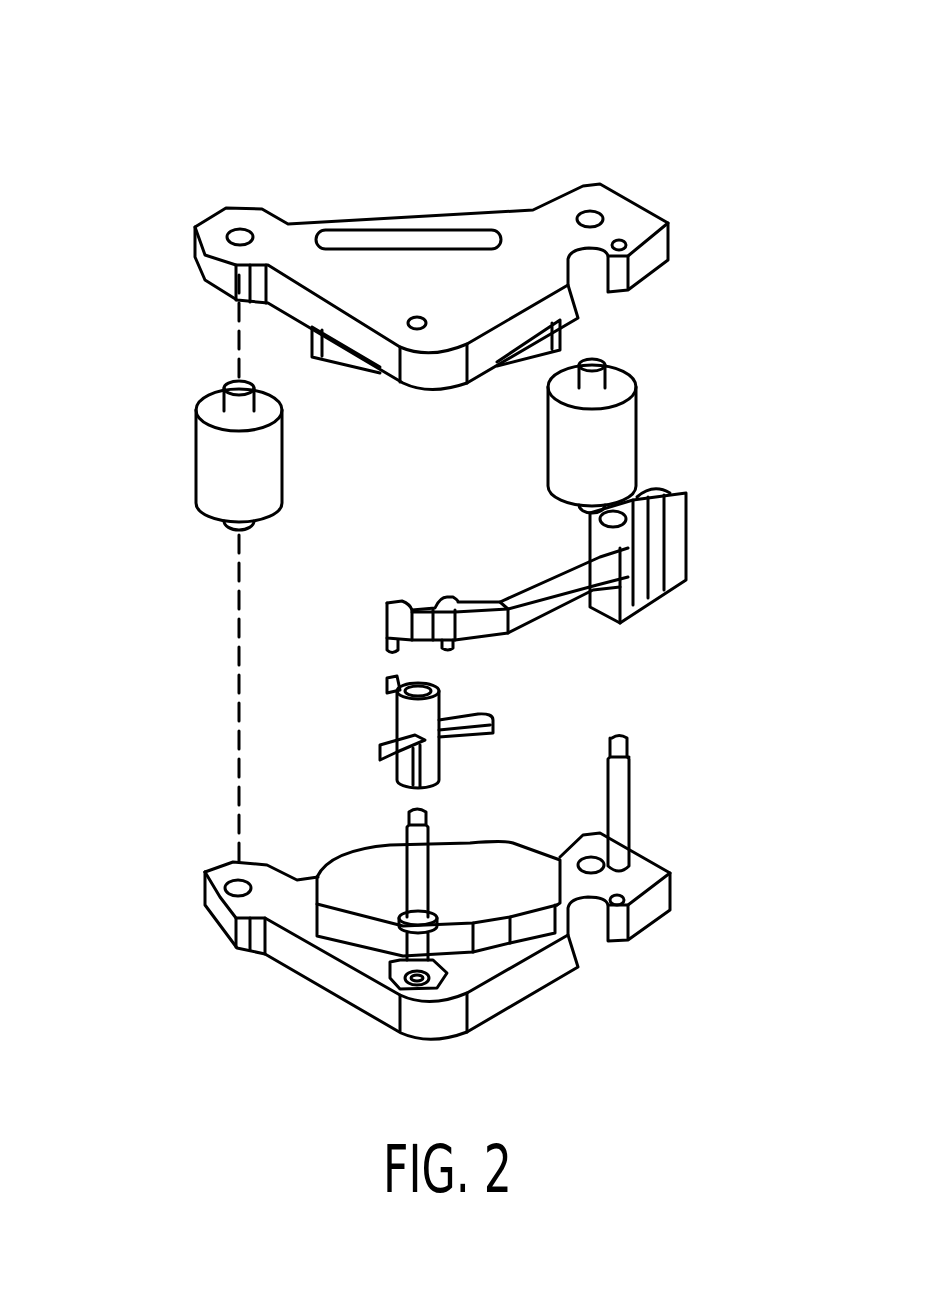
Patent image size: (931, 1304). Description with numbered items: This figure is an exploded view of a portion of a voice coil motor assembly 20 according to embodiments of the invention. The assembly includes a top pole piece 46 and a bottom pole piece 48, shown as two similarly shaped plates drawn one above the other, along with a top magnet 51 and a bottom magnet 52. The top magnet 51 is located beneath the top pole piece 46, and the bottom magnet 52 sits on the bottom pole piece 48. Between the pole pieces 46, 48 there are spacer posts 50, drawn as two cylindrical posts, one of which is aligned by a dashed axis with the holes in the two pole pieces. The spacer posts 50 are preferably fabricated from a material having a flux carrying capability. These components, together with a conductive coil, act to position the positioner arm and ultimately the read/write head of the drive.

The voice coil motor assembly 20 is at (628, 120).
The top pole piece 46 is at (513, 238).
The bottom pole piece 48 is at (530, 978).
The spacer posts 50 is at (210, 462).
The top magnet 51 is at (567, 337).
The bottom magnet 52 is at (512, 868).